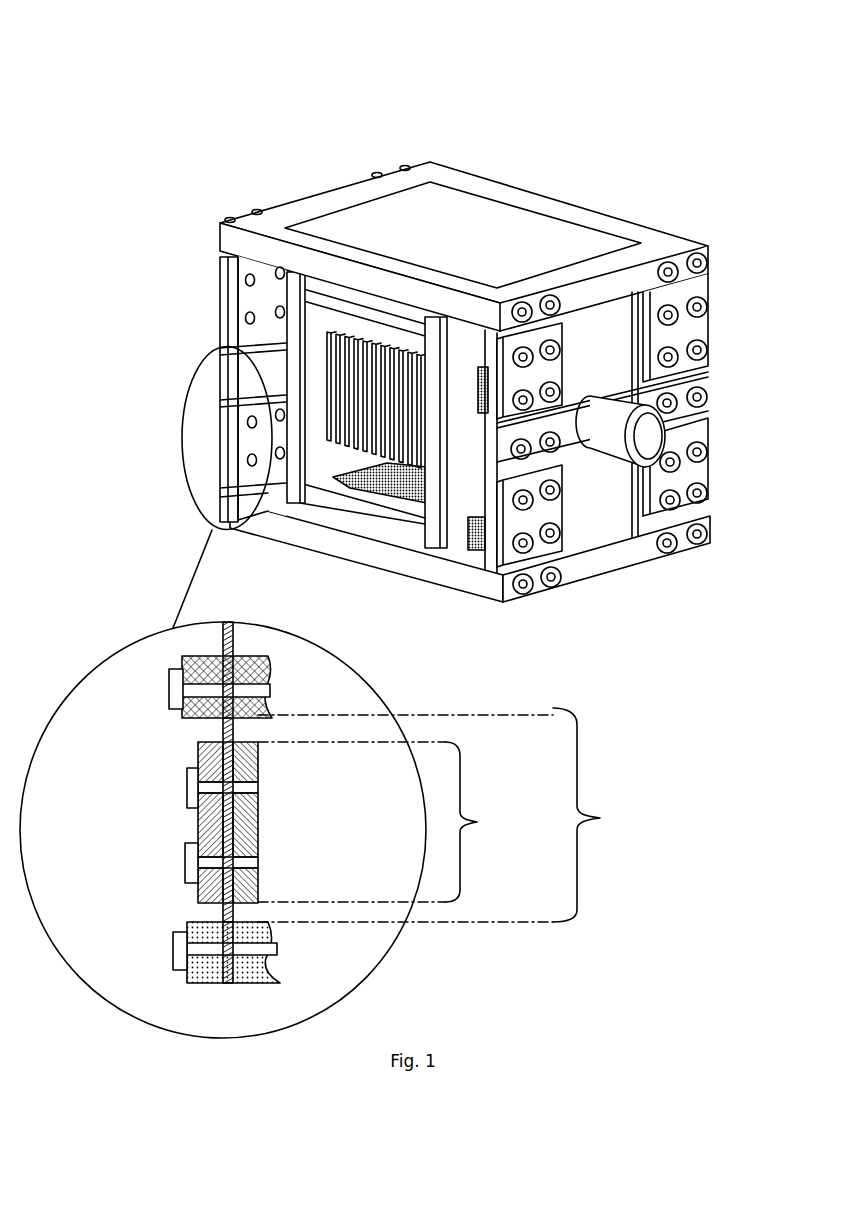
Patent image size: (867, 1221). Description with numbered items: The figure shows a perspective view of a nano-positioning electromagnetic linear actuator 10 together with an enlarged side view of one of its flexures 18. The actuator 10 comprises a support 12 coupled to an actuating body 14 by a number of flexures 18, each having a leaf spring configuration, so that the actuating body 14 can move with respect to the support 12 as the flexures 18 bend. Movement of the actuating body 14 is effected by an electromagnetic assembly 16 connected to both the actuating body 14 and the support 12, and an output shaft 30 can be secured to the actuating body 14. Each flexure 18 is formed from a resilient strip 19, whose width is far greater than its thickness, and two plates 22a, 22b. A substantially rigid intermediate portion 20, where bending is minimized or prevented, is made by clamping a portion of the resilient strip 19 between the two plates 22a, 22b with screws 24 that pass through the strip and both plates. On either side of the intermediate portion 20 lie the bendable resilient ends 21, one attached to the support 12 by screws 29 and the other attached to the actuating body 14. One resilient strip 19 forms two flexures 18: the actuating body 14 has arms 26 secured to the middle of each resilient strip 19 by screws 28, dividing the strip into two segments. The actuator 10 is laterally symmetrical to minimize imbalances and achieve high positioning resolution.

The nano-positioning electromagnetic linear actuator 10 is at (496, 118).
The support 12 is at (555, 207).
The actuating body 14 is at (390, 525).
The electromagnetic assembly 16 is at (402, 216).
The flexure 18 is at (718, 468).
The resilient strip 19 is at (229, 350).
The intermediate portion 20 is at (227, 444).
The resilient ends 21 is at (228, 489).
The first plate 22a is at (227, 478).
The second plate 22b is at (238, 480).
The screws 24 is at (700, 300).
The arms 26 is at (470, 448).
The screws 28 is at (553, 445).
The screws 29 is at (665, 275).
The output shaft 30 is at (607, 418).